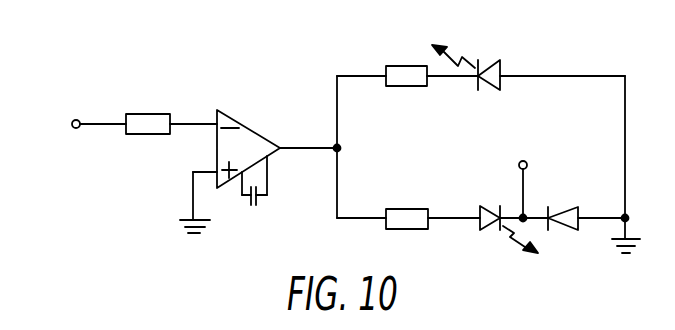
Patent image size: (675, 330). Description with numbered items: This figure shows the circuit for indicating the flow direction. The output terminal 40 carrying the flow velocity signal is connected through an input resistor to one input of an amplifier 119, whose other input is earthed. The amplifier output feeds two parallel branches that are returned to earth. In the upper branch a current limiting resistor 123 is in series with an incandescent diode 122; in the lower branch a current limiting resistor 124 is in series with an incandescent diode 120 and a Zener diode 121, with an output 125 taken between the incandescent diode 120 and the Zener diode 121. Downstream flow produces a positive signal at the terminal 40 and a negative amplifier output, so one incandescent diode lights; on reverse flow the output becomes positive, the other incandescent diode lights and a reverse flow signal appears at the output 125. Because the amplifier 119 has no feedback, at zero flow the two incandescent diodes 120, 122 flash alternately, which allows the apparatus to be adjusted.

The output terminal 40 is at (72, 121).
The operational amplifier / comparator 119 is at (252, 135).
The light-emitting diode 120 is at (490, 207).
The diode 121 is at (570, 210).
The light-emitting diode 122 is at (502, 60).
The resistor 123 is at (406, 62).
The resistor 124 is at (407, 206).
The terminal 125 is at (524, 161).